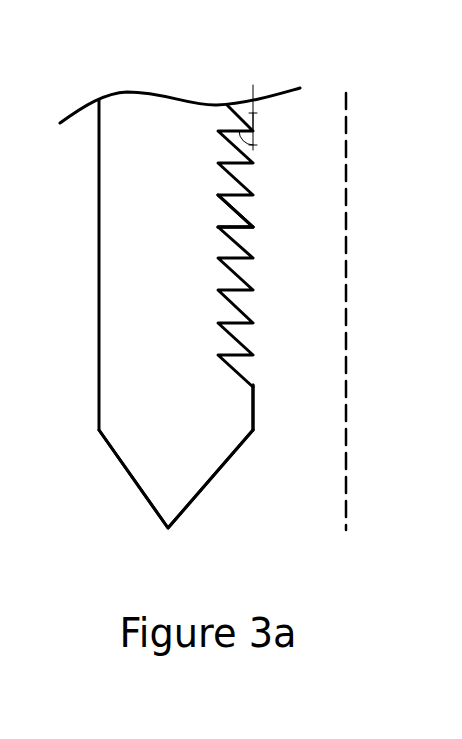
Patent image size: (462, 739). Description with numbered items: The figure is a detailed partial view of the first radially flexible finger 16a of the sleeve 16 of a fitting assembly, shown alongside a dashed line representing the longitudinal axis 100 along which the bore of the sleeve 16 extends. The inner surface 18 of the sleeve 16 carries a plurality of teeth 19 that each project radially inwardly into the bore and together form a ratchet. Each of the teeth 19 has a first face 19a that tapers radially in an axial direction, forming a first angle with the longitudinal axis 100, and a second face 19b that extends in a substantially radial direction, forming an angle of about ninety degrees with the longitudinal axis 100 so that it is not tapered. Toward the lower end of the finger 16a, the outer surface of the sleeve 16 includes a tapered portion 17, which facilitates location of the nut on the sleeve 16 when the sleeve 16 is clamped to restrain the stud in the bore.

The sleeve 16 is at (252, 478).
The first radially flexible finger 16a is at (220, 417).
The tapered portion 17 is at (128, 470).
The inner surface 18 is at (249, 286).
The teeth 19 is at (236, 225).
The first face 19a is at (240, 217).
The second face 19b is at (244, 228).
The longitudinal axis 100 is at (346, 107).